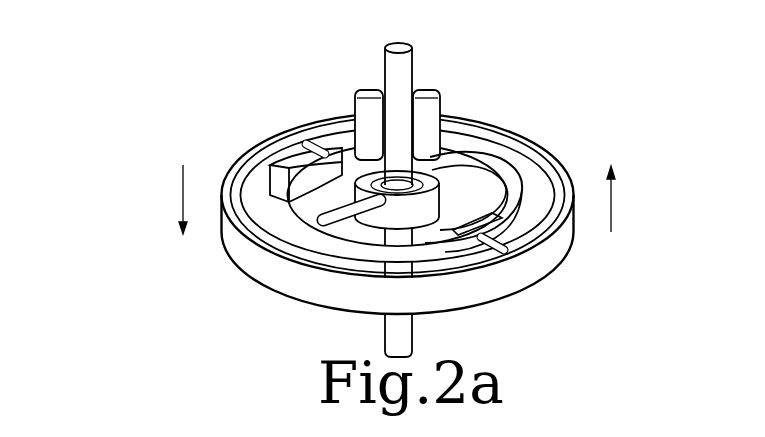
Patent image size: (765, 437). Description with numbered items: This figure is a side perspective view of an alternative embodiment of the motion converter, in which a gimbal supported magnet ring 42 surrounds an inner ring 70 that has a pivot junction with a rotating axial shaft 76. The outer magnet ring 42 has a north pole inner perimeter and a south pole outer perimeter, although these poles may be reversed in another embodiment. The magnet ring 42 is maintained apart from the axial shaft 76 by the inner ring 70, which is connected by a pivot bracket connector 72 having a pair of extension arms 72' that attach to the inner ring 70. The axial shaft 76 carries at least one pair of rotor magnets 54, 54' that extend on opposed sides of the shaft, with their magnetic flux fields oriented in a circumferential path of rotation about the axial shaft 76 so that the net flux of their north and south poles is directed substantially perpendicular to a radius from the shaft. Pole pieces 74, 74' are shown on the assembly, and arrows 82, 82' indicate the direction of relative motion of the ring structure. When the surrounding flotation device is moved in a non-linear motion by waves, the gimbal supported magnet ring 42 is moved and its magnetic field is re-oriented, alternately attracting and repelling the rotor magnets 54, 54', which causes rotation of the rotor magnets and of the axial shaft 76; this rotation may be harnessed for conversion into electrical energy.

The gimbal supported magnet ring 42 is at (503, 279).
The inner ring 70 is at (318, 284).
The pivot bracket connector 72 is at (461, 173).
The extension arm 72' is at (275, 212).
The pole piece 74 is at (544, 245).
The pole piece 74' is at (283, 119).
The rotor magnet 54 is at (440, 99).
The rotor magnet 54' is at (357, 101).
The axial shaft 76 is at (395, 45).
The direction of rotation arrow 82 is at (653, 199).
The direction of rotation arrow 82' is at (131, 196).